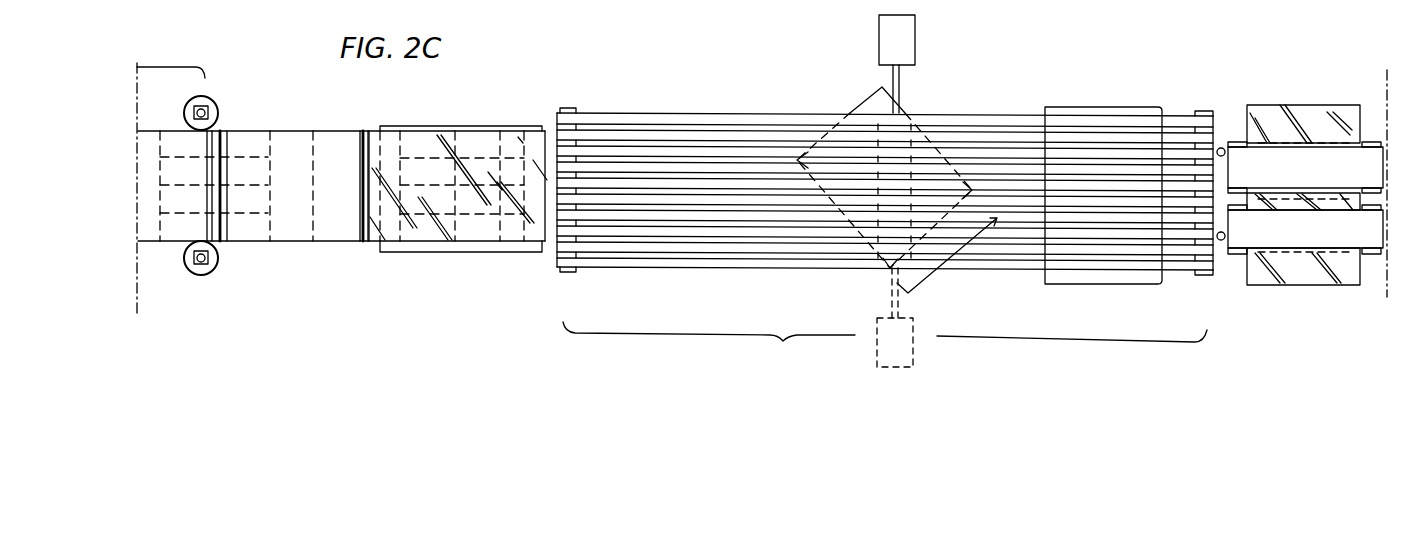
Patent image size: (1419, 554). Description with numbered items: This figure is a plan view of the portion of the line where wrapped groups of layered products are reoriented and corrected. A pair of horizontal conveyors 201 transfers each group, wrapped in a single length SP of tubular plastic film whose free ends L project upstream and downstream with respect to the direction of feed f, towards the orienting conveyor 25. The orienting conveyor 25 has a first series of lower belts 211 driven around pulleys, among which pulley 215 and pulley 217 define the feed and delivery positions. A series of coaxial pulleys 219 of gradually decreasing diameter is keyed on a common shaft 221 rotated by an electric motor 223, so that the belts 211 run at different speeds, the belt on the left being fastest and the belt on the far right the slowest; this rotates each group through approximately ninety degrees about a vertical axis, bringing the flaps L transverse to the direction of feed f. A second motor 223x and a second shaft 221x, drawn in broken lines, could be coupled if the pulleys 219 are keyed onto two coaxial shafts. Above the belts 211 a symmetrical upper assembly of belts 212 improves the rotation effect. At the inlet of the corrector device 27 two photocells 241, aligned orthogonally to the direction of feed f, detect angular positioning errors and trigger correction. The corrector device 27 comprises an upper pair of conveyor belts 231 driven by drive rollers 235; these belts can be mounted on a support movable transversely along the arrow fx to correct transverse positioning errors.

The horizontal conveyors 201 is at (345, 163).
The orienting conveyor 25 is at (885, 347).
The lower continuous flexible elements 211 is at (1103, 267).
The second assembly of belts 212 is at (1020, 118).
The pulley 215 is at (565, 108).
The pulley 217 is at (1200, 112).
The coaxial pulleys 219 is at (925, 110).
The shaft 221 is at (888, 78).
The second shaft 221x is at (890, 290).
The electric motor 223 is at (905, 24).
The second motor 223x is at (913, 357).
The photocells 241 is at (1224, 149).
The corrector device 27 is at (1303, 88).
The upper pair of conveyor belts 231 is at (1322, 180).
The drive rollers 235 is at (1373, 140).
The free ends of the film lengths L is at (1275, 105).
The single lengths of plastic film SP is at (1358, 276).
The direction of feed f is at (758, 80).
The transverse movement direction fx is at (1300, 312).